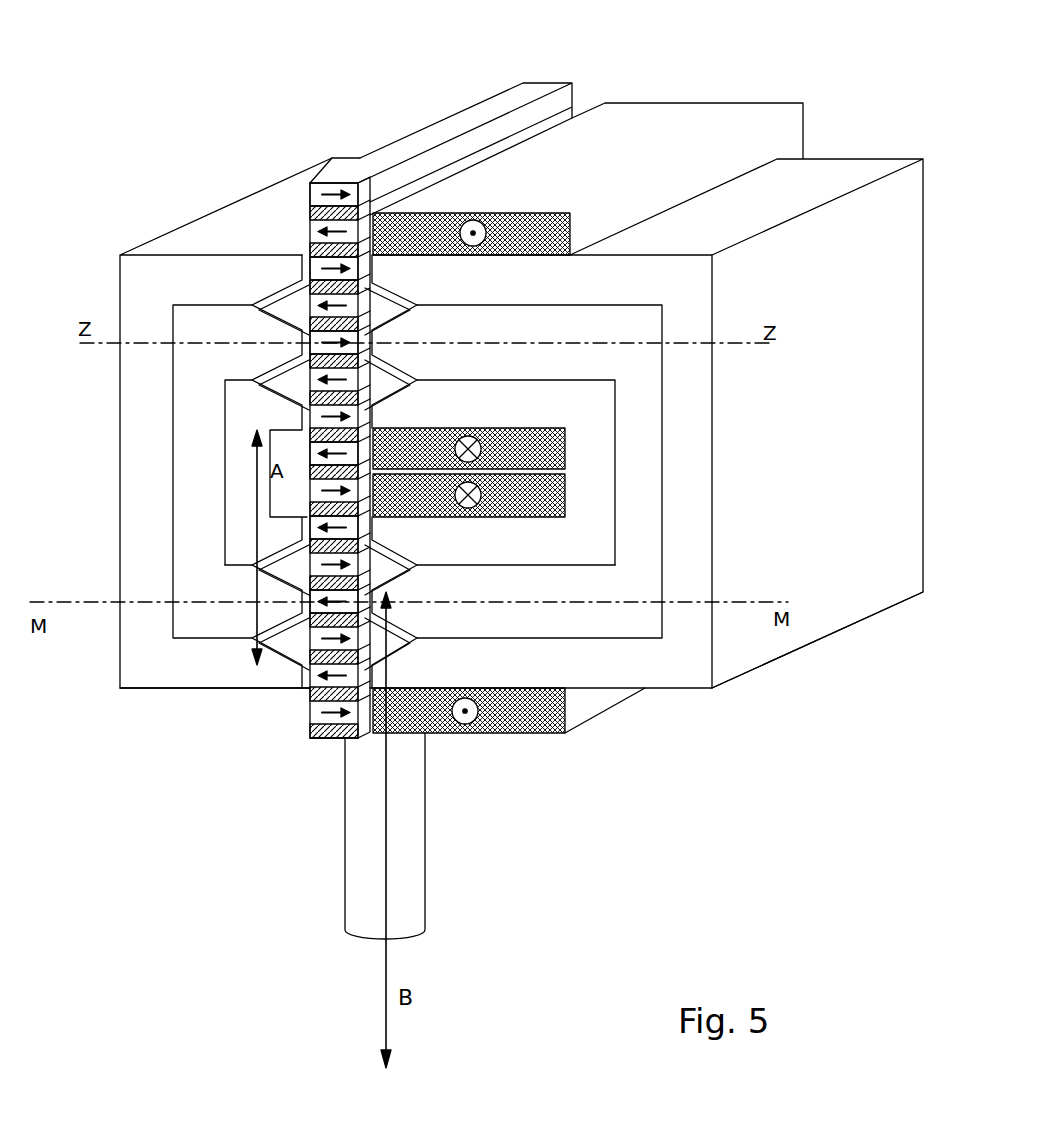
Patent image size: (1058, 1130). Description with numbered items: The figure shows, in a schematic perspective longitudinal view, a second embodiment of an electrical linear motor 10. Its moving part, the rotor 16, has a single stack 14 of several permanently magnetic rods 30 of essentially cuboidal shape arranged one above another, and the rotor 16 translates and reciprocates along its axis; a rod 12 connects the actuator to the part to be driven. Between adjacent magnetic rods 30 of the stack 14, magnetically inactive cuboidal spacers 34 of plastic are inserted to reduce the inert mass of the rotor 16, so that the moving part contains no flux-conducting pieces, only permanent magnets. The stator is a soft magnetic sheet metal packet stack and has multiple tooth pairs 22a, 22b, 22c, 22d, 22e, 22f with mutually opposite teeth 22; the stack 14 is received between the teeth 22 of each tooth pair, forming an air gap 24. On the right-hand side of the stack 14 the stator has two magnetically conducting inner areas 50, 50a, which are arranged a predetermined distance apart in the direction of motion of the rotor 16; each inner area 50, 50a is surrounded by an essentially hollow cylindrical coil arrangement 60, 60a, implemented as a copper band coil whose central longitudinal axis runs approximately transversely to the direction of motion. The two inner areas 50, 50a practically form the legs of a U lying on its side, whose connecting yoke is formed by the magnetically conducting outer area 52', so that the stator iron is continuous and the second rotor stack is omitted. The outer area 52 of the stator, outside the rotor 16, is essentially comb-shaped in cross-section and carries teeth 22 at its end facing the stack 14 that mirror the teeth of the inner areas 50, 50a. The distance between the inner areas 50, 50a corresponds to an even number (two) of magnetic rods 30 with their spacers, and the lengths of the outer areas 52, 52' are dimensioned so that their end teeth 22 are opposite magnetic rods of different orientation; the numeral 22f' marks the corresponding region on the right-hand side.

The electrical linear motor 10 is at (305, 812).
The rod 12 is at (400, 860).
The stack 14 is at (540, 83).
The rotor 16 is at (326, 742).
The teeth 22 is at (336, 457).
The tooth pair 22a is at (308, 250).
The tooth pair 22b is at (308, 324).
The tooth pair 22c is at (308, 398).
The tooth pair 22d is at (308, 509).
The tooth pair 22e is at (308, 583).
The tooth pair 22f is at (194, 617).
The permanent magnet 22f' is at (817, 640).
The air gap 24 is at (300, 742).
The permanently magnetic rod 30 is at (311, 225).
The spacer 34 is at (490, 156).
The inner area 50 is at (420, 437).
The inner area 50a is at (420, 579).
The outer area 52 is at (416, 423).
The outer area 52' is at (746, 395).
The coil arrangement 60 is at (560, 440).
The coil arrangement 60a is at (500, 715).